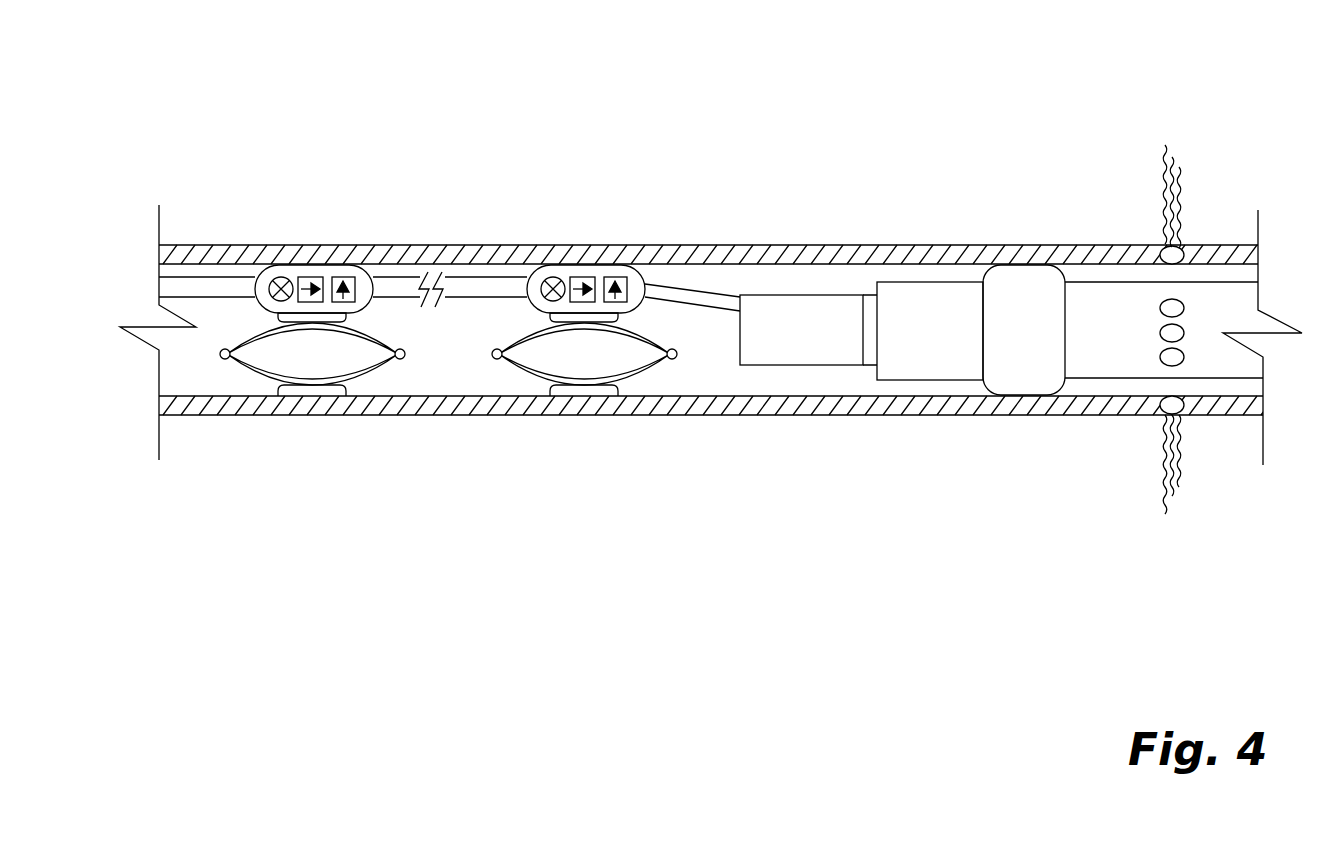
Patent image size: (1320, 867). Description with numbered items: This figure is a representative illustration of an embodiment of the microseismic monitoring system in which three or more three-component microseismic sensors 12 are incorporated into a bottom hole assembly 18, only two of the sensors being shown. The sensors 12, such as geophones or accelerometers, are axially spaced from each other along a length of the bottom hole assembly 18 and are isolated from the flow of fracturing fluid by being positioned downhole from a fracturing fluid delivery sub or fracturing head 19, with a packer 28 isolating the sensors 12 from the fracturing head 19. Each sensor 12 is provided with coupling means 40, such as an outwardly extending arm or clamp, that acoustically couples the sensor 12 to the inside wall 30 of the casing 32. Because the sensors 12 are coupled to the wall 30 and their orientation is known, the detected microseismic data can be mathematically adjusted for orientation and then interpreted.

The 3-component microseismic sensor 12 is at (323, 270).
The bottom hole assembly 18 is at (940, 110).
The fracturing head 19 is at (1215, 298).
The packer 28 is at (1018, 380).
The inside wall 30 is at (483, 266).
The casing 32 is at (207, 248).
The coupling means 40 is at (366, 377).